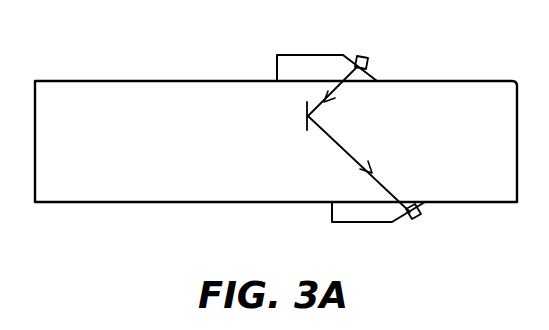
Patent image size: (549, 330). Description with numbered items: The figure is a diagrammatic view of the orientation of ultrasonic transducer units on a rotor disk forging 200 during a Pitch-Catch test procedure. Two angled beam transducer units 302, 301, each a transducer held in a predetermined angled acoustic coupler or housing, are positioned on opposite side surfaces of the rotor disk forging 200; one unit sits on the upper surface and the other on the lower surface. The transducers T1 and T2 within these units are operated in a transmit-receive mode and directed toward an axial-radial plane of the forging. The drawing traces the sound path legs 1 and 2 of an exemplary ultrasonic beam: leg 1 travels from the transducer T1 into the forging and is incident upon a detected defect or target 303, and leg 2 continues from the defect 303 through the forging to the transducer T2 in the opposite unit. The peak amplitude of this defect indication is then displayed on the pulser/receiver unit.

The rotor disk forging 200 is at (100, 81).
The angled beam transducer unit 302 is at (333, 55).
The transducer T1 is at (371, 56).
The sound path leg 1 is at (332, 106).
The detected defect 303 is at (305, 116).
The sound path leg 2 is at (355, 172).
The transducer T2 is at (421, 217).
The angled beam transducer unit 301 is at (367, 226).